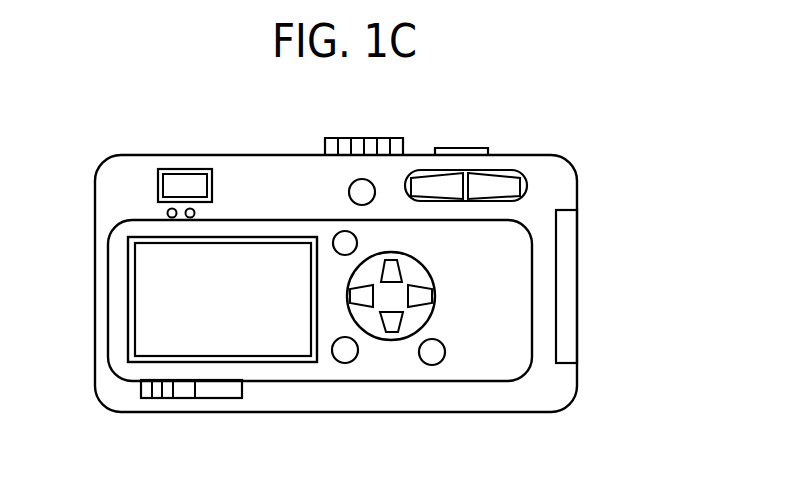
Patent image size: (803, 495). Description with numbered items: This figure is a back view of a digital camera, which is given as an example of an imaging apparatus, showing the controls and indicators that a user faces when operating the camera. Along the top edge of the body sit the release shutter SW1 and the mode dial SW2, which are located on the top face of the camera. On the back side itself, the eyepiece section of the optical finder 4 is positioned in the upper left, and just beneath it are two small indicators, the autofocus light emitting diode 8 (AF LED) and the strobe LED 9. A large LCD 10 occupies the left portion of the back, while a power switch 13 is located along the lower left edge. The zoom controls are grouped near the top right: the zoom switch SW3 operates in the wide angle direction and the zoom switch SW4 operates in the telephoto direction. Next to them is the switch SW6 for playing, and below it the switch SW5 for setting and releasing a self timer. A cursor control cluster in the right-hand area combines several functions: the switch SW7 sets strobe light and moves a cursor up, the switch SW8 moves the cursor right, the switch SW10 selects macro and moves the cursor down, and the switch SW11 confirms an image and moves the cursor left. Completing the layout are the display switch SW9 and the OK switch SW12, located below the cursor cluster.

The optical finder 4 is at (183, 180).
The autofocus light emitting diode 8 is at (168, 212).
The strobe LED 9 is at (195, 212).
The LCD 10 is at (147, 313).
The power switch 13 is at (145, 389).
The release shutter SW1 is at (468, 147).
The mode dial SW2 is at (347, 139).
The zoom switch in a wide angle direction SW3 is at (428, 182).
The zoom switch in a telephoto direction SW4 is at (504, 181).
The switch for setting and releasing a self timer SW5 is at (357, 242).
The switch for playing SW6 is at (349, 191).
The switch for setting strobe light and up movement of a cursor SW7 is at (395, 272).
The switch for right movement of a cursor SW8 is at (425, 298).
The display switch SW9 is at (435, 365).
The switch for macro and down movement of a cursor SW10 is at (392, 333).
The switch for confirming an image and left movement of a cursor SW11 is at (360, 303).
The OK switch SW12 is at (346, 364).